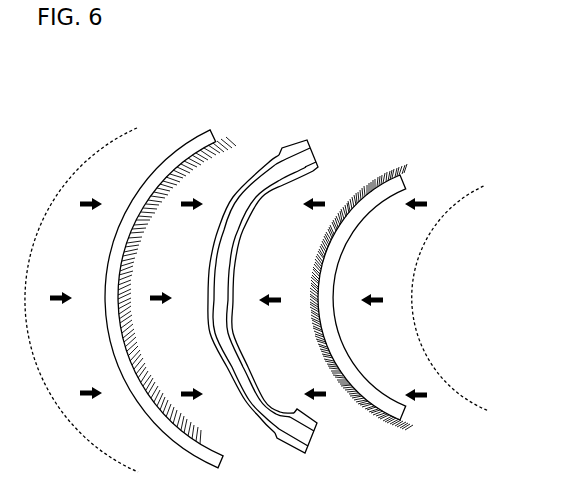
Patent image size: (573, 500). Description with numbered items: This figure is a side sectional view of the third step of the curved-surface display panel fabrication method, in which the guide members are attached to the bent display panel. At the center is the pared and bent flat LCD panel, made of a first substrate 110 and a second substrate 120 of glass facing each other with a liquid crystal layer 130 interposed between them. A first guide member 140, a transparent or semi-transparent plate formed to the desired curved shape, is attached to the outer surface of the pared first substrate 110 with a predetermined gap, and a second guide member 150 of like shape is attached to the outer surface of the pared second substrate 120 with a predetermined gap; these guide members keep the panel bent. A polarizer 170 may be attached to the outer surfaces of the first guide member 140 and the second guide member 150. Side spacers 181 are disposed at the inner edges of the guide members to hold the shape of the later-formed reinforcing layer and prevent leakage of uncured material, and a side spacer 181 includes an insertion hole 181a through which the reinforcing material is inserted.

The first substrate 110 is at (320, 181).
The second substrate 120 is at (290, 141).
The liquid crystal layer 130 is at (318, 153).
The first guide member 140 is at (405, 180).
The second guide member 150 is at (193, 127).
The polarizer 170 is at (104, 137).
The side spacer 181 is at (198, 160).
The insertion hole 181a is at (312, 300).